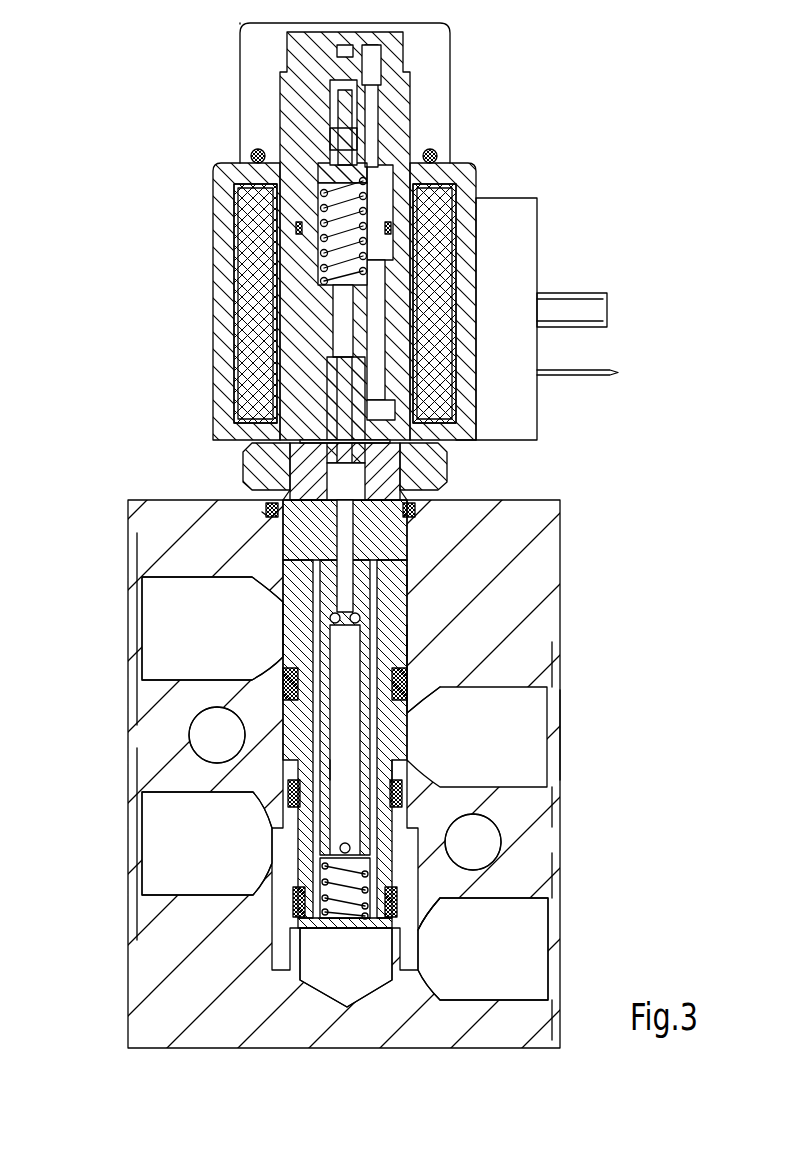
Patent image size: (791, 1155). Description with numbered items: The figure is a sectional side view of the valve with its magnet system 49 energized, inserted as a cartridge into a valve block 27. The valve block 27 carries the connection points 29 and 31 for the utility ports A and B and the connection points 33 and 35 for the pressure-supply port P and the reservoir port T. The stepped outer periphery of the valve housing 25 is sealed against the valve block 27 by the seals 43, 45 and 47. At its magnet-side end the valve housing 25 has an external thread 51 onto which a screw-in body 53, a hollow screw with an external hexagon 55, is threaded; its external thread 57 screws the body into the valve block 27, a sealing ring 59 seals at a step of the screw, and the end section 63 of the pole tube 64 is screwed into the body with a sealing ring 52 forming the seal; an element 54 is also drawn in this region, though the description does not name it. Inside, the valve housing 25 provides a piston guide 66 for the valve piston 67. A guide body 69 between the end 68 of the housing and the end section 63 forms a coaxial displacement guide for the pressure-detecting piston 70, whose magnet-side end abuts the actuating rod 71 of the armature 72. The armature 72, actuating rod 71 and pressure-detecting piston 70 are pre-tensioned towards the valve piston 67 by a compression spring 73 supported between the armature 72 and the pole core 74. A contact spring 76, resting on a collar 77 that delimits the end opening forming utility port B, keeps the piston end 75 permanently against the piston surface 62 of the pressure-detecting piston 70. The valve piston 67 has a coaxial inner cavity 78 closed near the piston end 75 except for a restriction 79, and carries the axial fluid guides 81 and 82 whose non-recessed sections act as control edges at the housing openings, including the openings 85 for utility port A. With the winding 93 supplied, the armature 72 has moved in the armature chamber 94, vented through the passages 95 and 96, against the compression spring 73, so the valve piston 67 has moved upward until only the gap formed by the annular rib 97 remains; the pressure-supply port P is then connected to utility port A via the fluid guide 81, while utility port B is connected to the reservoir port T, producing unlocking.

The valve housing 25 is at (405, 676).
The valve block 27 is at (541, 520).
The connection point 29 is at (551, 688).
The connection point 31 is at (520, 901).
The connection point 33 is at (275, 800).
The connection point 35 is at (148, 592).
The seal 43 is at (295, 918).
The seal 45 is at (288, 785).
The seal 47 is at (285, 685).
The magnet system 49 is at (166, 266).
The external thread 51 is at (402, 545).
The sealing ring 52 is at (268, 506).
The screw-in body 53 is at (447, 475).
The valve insert 54 is at (325, 540).
The external hexagon 55 is at (462, 440).
The external thread 57 is at (408, 580).
The sealing ring 59 is at (262, 512).
The piston surface 62 is at (346, 615).
The end section 63 is at (288, 488).
The pole tube 64 is at (225, 372).
The piston guide 66 is at (405, 700).
The valve piston 67 is at (428, 872).
The end 68 is at (290, 585).
The guide body 69 is at (410, 512).
The pressure-detecting piston 70 is at (397, 585).
The actuating rod 71 is at (250, 450).
The armature 72 is at (305, 330).
The compression spring 73 is at (255, 215).
The pole core 74 is at (312, 112).
The piston end 75 is at (328, 620).
The contact spring 76 is at (320, 932).
The collar 77 is at (362, 928).
The inner cavity 78 is at (395, 776).
The restriction 79 is at (409, 645).
The fluid guide 81 is at (343, 765).
The fluid guide 82 is at (300, 705).
The openings 85 is at (300, 745).
The winding 93 is at (480, 205).
The armature chamber 94 is at (380, 407).
The passage 95 is at (374, 300).
The passage 96 is at (380, 115).
The annular rib 97 is at (310, 604).
The utility port A is at (412, 735).
The utility port B is at (340, 935).
The pressure-supply port P is at (275, 840).
The reservoir port T is at (272, 648).